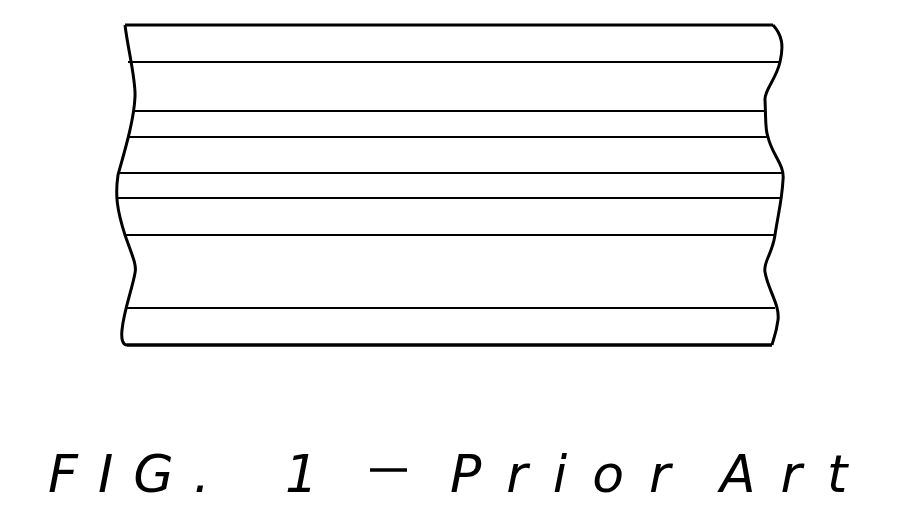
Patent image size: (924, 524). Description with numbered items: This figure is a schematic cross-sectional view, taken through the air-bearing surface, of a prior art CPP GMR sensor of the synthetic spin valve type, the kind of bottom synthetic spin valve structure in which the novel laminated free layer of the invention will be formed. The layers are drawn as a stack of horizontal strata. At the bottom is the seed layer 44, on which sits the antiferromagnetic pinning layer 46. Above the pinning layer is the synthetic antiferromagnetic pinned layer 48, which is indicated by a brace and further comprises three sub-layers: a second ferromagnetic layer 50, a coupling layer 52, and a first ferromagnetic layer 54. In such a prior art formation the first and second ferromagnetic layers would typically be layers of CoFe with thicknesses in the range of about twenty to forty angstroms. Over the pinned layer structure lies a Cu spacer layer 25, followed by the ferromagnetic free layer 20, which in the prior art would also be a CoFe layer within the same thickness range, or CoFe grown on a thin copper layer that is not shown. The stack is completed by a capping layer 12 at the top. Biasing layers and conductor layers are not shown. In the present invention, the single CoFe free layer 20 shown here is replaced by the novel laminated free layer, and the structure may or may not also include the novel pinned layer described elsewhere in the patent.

The capping layer 12 is at (757, 43).
The ferromagnetic free layer 20 is at (757, 86).
The Cu spacer layer 25 is at (757, 122).
The first ferromagnetic layer (AP1) 54 is at (760, 154).
The coupling layer 52 is at (760, 184).
The second ferromagnetic layer (AP2) 50 is at (760, 221).
The antiferromagnetic pinning layer 46 is at (757, 271).
The seed layer 44 is at (760, 326).
The synthetic antiferromagnetic pinned layer 48 is at (105, 138).